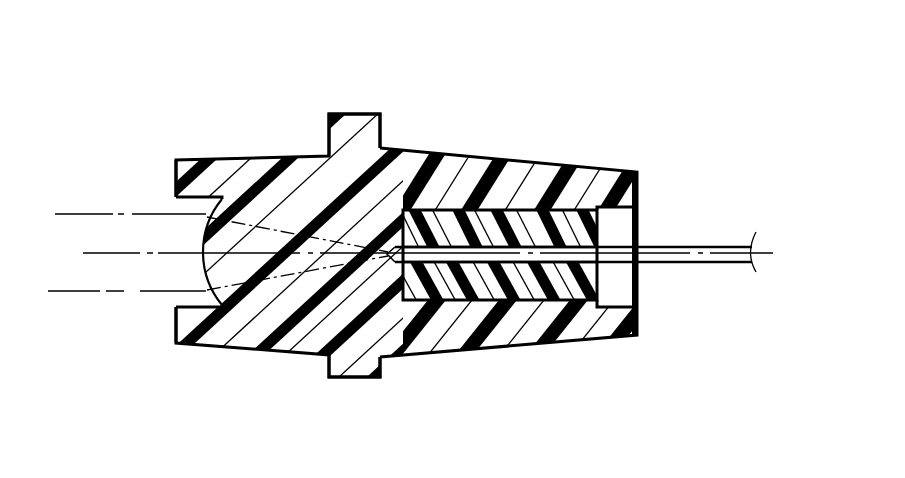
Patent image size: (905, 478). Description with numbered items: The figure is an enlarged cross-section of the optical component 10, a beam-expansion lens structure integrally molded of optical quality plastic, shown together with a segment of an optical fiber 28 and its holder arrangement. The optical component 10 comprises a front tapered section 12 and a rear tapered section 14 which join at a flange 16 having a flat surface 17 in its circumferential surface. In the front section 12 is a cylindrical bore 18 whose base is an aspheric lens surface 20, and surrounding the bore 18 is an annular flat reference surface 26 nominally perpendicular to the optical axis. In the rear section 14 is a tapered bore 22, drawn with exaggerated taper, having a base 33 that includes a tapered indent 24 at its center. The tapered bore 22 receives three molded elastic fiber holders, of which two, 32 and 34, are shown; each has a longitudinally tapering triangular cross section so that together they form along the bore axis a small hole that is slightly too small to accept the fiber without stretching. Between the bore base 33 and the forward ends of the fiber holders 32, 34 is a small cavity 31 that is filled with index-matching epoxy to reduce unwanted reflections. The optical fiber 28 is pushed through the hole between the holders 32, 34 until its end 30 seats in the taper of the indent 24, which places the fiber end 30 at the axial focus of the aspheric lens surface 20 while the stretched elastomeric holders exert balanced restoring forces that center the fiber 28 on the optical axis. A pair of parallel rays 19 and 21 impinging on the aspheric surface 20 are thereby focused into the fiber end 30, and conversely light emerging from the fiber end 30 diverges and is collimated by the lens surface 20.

The optical component 10 is at (534, 150).
The front tapered section 12 is at (236, 158).
The rear tapered section 14 is at (482, 163).
The flange 16 is at (352, 113).
The flat surface 17 is at (355, 378).
The cylindrical bore 18 is at (176, 203).
The parallel ray 19 is at (103, 213).
The aspheric lens surface 20 is at (205, 262).
The parallel ray 21 is at (106, 292).
The tapered bore 22 is at (616, 207).
The tapered indent 24 is at (388, 257).
The annular flat reference surface 26 is at (176, 172).
The optical fiber 28 is at (710, 247).
The optical fiber end 30 is at (388, 250).
The cavity 31 is at (410, 232).
The elastic fiber holder 32 is at (571, 215).
The tapered bore base 33 is at (431, 242).
The elastic fiber holder 34 is at (538, 290).